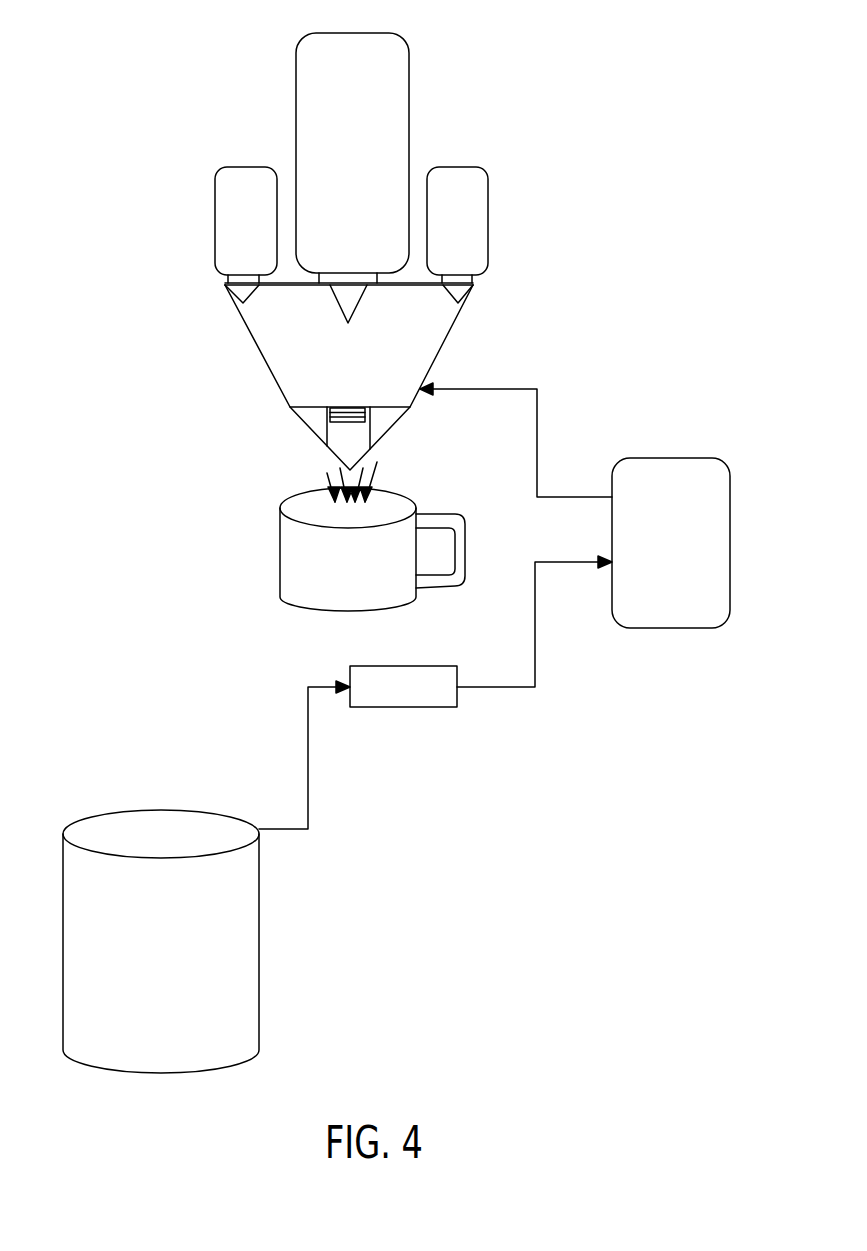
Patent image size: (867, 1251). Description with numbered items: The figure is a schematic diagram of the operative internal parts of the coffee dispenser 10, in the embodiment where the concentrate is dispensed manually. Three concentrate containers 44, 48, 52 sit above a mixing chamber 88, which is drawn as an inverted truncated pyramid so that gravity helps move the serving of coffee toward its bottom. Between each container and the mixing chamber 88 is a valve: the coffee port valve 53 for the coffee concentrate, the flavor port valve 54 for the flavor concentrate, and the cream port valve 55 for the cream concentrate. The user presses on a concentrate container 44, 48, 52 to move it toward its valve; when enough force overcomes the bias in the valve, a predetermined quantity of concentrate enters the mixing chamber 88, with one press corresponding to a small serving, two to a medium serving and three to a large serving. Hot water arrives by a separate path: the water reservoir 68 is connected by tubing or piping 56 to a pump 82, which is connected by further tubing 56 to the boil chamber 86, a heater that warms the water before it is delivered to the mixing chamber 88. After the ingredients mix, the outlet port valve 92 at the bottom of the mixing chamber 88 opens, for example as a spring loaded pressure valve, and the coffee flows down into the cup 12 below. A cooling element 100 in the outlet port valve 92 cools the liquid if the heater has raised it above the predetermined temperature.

The coffee dispenser 10 is at (135, 85).
The concentrate container 44 is at (409, 96).
The concentrate container 48 is at (215, 212).
The concentrate container 52 is at (488, 212).
The cream port valve 55 is at (465, 295).
The flavor port valve 54 is at (238, 297).
The coffee port valve 53 is at (358, 303).
The mixing chamber 88 is at (298, 360).
The outlet port valve 92 is at (367, 412).
The cooling element 100 is at (330, 415).
The cup 12 is at (295, 573).
The boil chamber 86 is at (685, 615).
The pump 82 is at (418, 698).
The tubing or piping 56 is at (310, 772).
The water reservoir 68 is at (240, 1014).